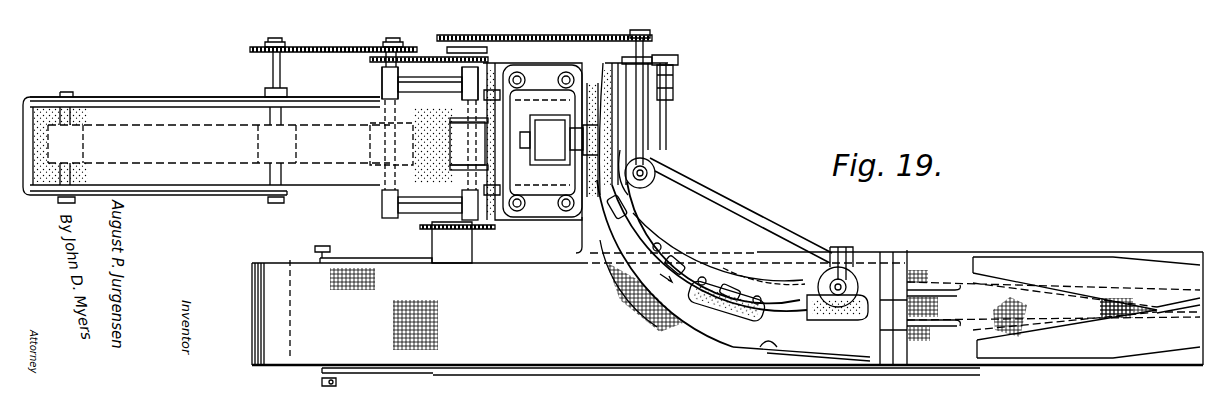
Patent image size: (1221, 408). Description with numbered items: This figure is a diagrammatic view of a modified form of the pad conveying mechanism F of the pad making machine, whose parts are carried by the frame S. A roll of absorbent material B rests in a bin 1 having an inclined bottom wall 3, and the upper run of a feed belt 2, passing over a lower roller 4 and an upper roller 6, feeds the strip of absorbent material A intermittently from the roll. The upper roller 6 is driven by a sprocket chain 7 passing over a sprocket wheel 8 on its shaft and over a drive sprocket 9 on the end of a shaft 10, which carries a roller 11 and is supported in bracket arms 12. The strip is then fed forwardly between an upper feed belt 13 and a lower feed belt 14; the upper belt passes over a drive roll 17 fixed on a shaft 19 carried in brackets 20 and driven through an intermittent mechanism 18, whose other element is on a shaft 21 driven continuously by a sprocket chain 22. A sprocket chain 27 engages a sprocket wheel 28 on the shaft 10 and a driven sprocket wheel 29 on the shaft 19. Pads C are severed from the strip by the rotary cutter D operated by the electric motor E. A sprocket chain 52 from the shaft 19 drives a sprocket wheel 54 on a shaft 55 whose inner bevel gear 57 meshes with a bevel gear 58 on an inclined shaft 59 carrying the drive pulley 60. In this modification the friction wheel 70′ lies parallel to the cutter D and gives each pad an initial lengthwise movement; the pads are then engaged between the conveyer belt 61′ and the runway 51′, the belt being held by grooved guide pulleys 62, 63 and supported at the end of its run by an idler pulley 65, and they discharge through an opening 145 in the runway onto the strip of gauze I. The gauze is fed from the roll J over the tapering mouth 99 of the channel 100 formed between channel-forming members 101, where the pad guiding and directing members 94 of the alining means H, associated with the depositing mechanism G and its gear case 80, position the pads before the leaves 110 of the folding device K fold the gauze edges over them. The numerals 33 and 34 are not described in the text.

The roll of absorbent material B is at (100, 122).
The bin 1 is at (200, 98).
The lower roller 4 is at (48, 100).
The upper roller 6 is at (292, 130).
The feed belt 2 is at (170, 188).
The inclined bottom wall 3 is at (200, 190).
The sprocket wheel 8 is at (252, 47).
The sprocket chain 7 is at (327, 47).
The drive sprocket 9 is at (410, 55).
The plate 33 is at (448, 38).
The intermittent mechanism 18 is at (456, 45).
The sprocket chain 52 is at (531, 35).
The sprocket wheel 28 is at (372, 60).
The driven sprocket wheel 29 is at (495, 60).
The strip of absorbent material A is at (375, 182).
The shaft 10 is at (382, 70).
The bracket arms 12 is at (382, 88).
The sprocket chain 27 is at (415, 70).
The brackets 20 is at (479, 82).
The roller 11 is at (375, 118).
The lower feed belt 14 is at (370, 148).
The drive roll 17 is at (469, 127).
The upper feed belt 13 is at (467, 143).
The shaft 19 is at (472, 160).
The electric motor E is at (540, 141).
The plate 34 is at (576, 220).
The rotary cutter D is at (597, 62).
The shaft 55 is at (643, 82).
The sprocket wheel 54 is at (660, 38).
The friction wheel 70′ is at (668, 90).
The pads C is at (660, 133).
The bevel gear 58 is at (655, 178).
The bevel gear 57 is at (658, 168).
The inclined shaft 59 is at (648, 188).
The drive pulley 60 is at (662, 188).
The runway 51′ is at (700, 240).
The conveyer belt 61′ is at (782, 300).
The grooved guide pulleys 62 is at (706, 246).
The grooved guide pulleys 63 is at (700, 312).
The pad conveying mechanism F is at (665, 263).
The idler pulley 65 is at (840, 262).
The opening 145 is at (895, 262).
The tapering mouth 99 is at (752, 350).
The roll of gauze J is at (256, 305).
The sprocket chain 22 is at (457, 242).
The shaft 21 is at (472, 252).
The frame S is at (1191, 243).
The folding device K is at (1130, 243).
The channel-forming members 101 is at (1010, 256).
The leaves 110 is at (1077, 330).
The channel 100 is at (1153, 317).
The pad guiding and directing members 94 is at (948, 290).
The strip of gauze I is at (943, 260).
The alining means H is at (960, 325).
The gear case 80 is at (778, 5).
The depositing mechanism G is at (806, 9).